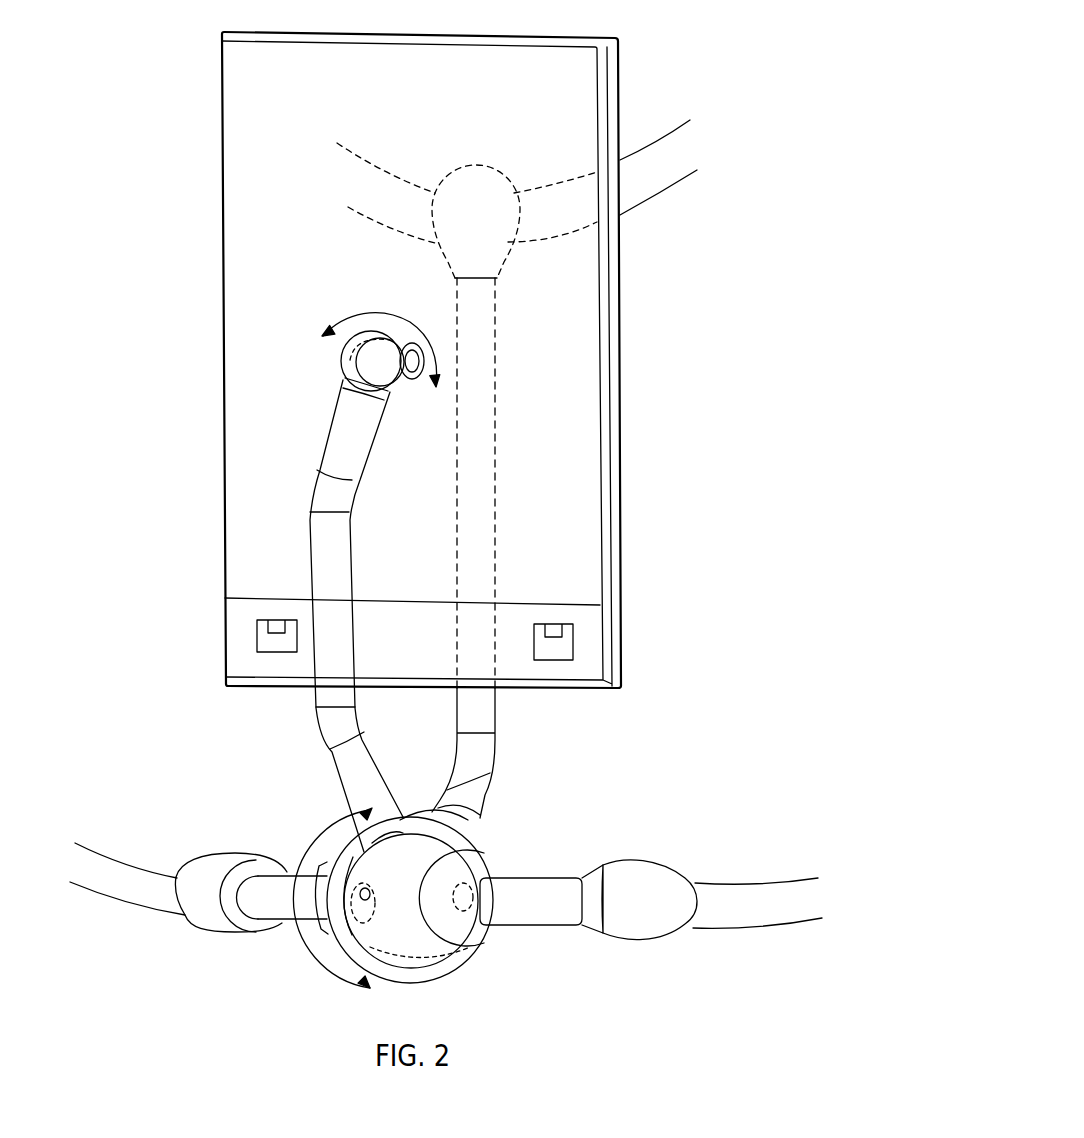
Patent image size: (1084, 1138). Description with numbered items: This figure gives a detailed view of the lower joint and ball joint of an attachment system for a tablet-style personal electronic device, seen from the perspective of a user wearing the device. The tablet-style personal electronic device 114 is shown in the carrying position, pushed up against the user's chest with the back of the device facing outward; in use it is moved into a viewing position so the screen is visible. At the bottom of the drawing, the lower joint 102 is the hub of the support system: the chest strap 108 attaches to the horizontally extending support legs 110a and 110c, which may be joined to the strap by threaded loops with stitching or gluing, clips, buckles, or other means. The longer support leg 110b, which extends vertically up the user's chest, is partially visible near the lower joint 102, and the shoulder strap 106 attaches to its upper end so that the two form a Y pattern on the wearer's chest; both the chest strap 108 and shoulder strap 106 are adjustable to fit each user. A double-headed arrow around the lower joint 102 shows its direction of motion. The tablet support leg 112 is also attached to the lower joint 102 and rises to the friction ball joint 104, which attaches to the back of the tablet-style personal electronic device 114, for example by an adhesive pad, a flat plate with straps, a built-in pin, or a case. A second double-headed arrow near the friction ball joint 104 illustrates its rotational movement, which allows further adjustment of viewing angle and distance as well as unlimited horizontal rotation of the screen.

The lower joint 102 is at (467, 913).
The friction ball joint 104 is at (355, 360).
The shoulder strap 106 is at (657, 153).
The chest strap 108 is at (120, 876).
The support leg 110a is at (293, 910).
The support leg 110b is at (483, 778).
The support leg 110c is at (553, 908).
The tablet support leg 112 is at (320, 543).
The tablet-style personal electronic device 114 is at (255, 193).